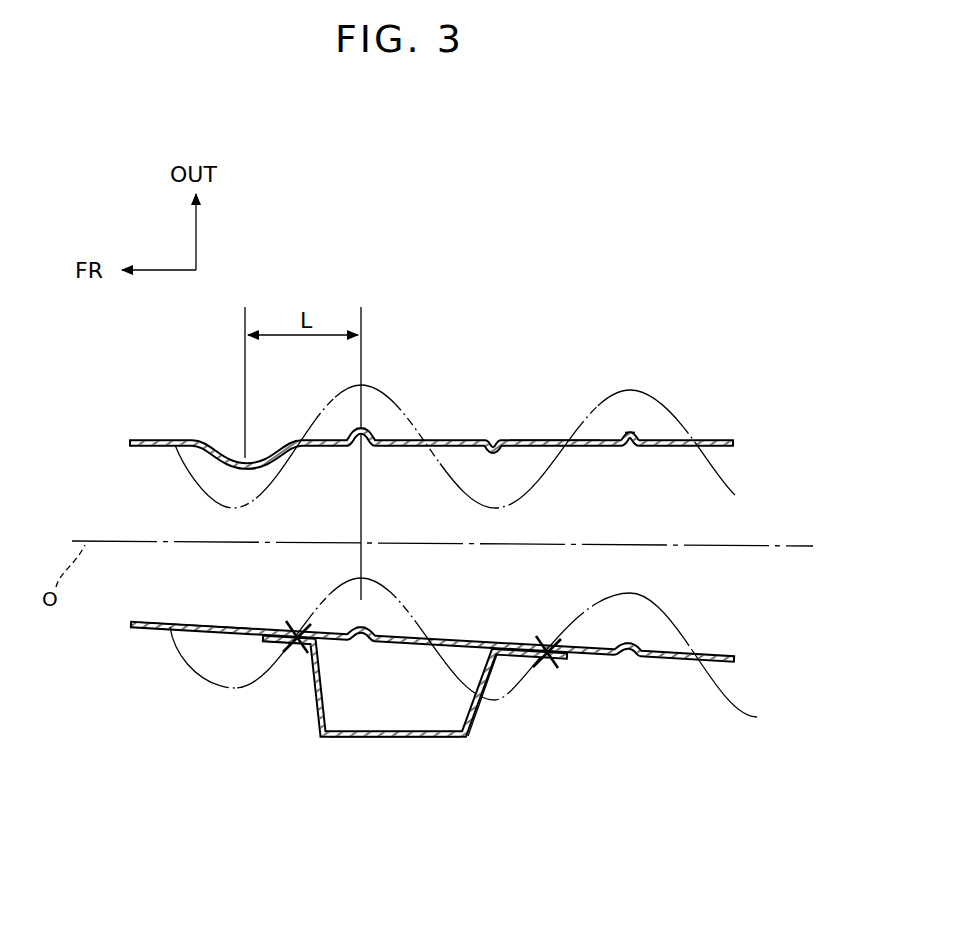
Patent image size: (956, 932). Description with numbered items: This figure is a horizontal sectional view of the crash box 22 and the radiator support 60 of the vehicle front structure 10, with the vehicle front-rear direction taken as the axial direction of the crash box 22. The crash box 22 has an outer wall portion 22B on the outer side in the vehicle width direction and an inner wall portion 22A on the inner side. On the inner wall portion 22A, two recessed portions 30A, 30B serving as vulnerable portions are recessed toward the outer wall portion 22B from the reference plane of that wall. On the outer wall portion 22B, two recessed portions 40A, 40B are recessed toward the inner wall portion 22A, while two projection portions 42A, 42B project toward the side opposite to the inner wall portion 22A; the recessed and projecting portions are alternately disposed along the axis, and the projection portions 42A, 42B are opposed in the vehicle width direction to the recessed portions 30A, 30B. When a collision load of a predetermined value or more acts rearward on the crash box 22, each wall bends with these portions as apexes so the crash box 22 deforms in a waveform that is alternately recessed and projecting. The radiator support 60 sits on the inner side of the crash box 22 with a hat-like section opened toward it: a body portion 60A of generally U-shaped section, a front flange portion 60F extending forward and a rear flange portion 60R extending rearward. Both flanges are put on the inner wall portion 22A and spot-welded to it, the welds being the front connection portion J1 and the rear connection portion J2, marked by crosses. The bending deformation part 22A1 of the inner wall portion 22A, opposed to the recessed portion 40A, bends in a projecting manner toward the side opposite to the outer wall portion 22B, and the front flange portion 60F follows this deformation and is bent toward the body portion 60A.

The vehicle body structure 10 is at (643, 255).
The crash box 22 is at (718, 437).
The inner wall portion 22A is at (485, 641).
The bending deformation part 22A1 is at (183, 690).
The outer wall portion 22B is at (635, 390).
The recessed portion 30A is at (365, 627).
The recessed portion 30B is at (629, 645).
The recessed portion 40A is at (263, 470).
The recessed portion 40B is at (498, 455).
The projection portion 42A is at (378, 432).
The projection portion 42B is at (633, 432).
The radiator support 60 is at (383, 740).
The body portion 60A is at (435, 740).
The front flange portion 60F is at (297, 645).
The rear flange portion 60R is at (510, 652).
The front connection portion J1 is at (297, 630).
The rear connection portion J2 is at (547, 645).